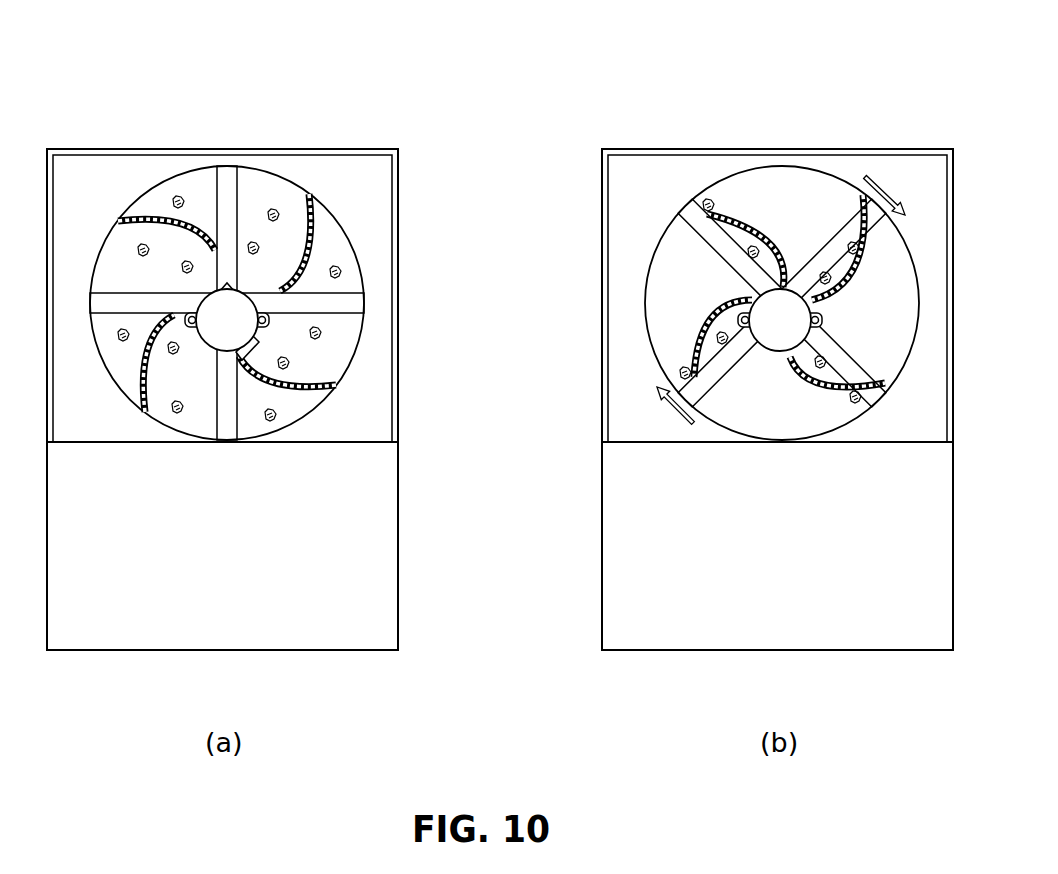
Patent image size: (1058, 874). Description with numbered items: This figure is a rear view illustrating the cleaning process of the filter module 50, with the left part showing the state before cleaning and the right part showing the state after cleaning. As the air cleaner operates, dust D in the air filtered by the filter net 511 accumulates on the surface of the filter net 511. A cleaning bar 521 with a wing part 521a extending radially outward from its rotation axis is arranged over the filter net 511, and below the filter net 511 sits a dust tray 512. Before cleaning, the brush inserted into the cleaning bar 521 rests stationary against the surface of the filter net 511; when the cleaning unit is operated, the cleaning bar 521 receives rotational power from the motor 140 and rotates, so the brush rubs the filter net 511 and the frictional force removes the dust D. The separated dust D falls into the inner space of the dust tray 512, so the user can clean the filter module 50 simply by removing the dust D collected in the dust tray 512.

The filter module 50 is at (183, 114).
The filter net 511 is at (748, 241).
The wing part 521a is at (742, 268).
The cleaning bar 521 is at (533, 302).
The motor 140 is at (768, 330).
The dust tray 512 is at (617, 512).
The dust D is at (275, 207).